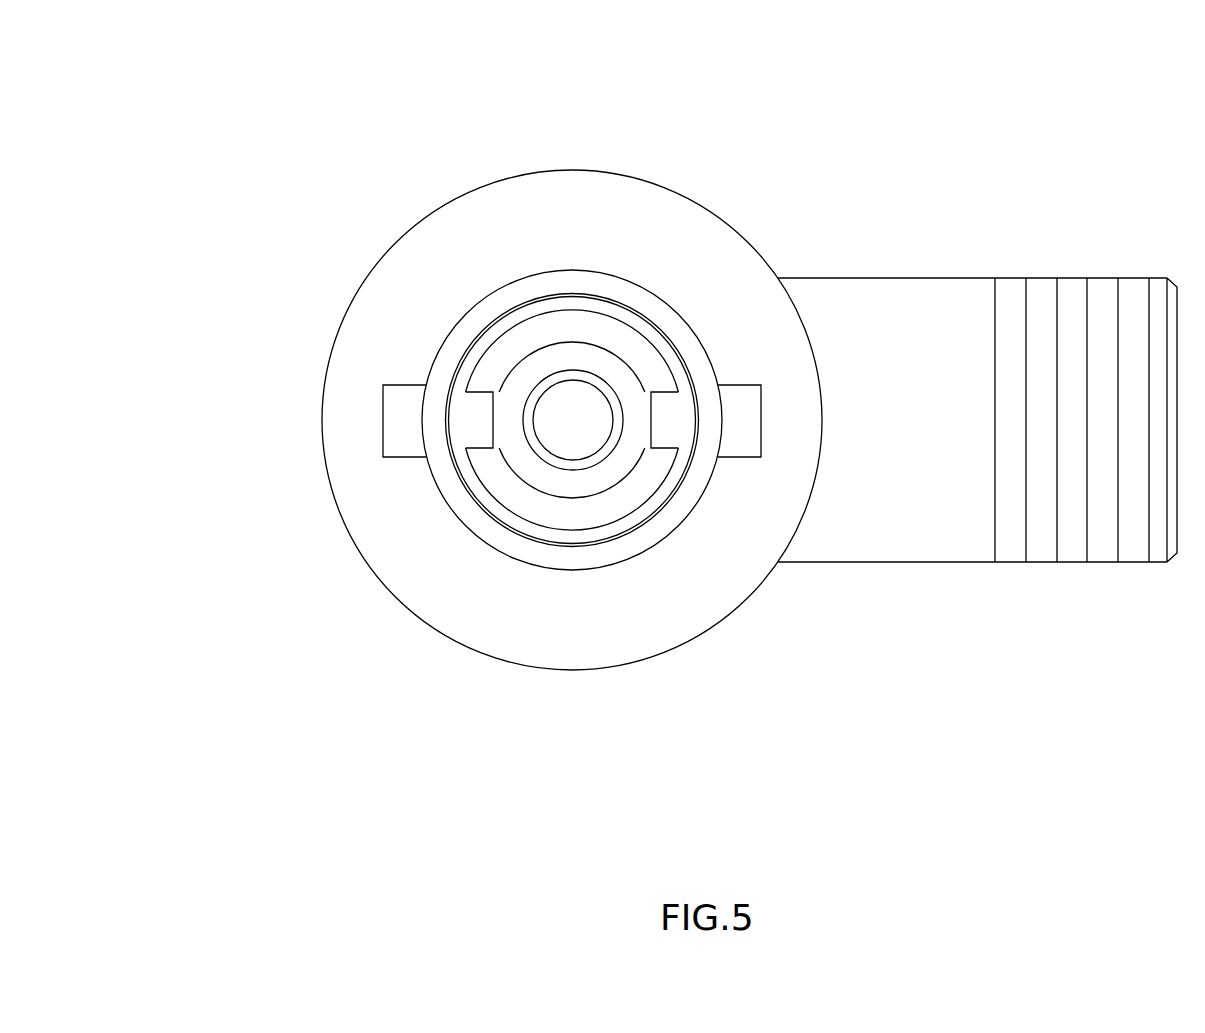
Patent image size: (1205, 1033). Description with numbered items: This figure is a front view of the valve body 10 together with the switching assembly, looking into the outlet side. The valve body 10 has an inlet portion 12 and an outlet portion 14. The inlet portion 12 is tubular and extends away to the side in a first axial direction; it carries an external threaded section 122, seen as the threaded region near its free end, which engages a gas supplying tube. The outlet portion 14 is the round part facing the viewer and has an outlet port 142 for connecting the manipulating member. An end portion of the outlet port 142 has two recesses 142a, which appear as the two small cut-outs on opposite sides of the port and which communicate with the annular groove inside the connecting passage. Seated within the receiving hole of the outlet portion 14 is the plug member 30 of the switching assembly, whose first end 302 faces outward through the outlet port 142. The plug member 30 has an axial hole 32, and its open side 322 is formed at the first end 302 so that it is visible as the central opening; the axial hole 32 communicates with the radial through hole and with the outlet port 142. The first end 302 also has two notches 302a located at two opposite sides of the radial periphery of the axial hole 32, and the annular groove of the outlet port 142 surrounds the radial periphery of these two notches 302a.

The valve body 10 is at (703, 200).
The inlet portion 12 is at (977, 350).
The external threaded section 122 is at (1057, 310).
The outlet portion 14 is at (470, 190).
The outlet port 142 is at (598, 573).
The recess 142a is at (396, 448).
The plug member 30 is at (490, 322).
The first end 302 is at (505, 515).
The notch 302a is at (480, 437).
The axial hole 32 is at (568, 392).
The open side 322 is at (560, 470).